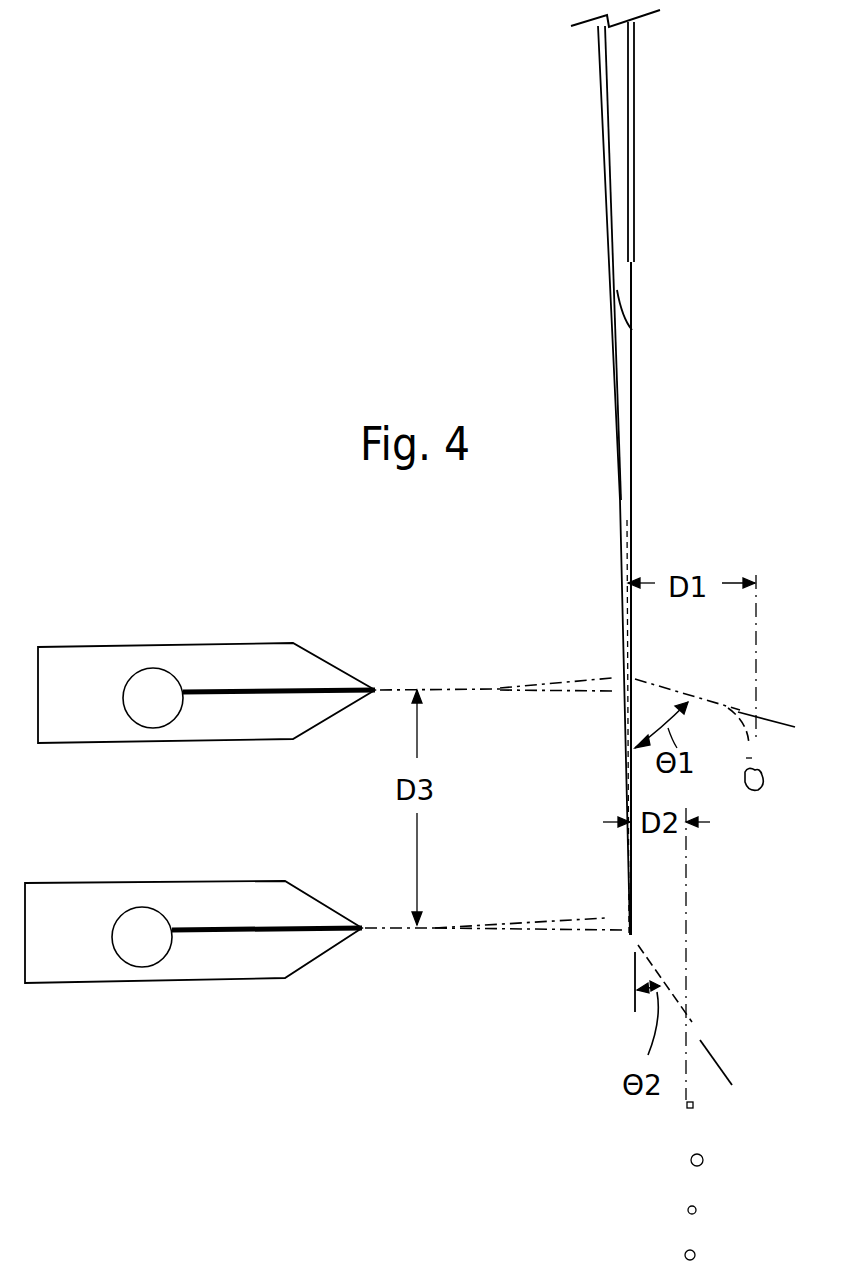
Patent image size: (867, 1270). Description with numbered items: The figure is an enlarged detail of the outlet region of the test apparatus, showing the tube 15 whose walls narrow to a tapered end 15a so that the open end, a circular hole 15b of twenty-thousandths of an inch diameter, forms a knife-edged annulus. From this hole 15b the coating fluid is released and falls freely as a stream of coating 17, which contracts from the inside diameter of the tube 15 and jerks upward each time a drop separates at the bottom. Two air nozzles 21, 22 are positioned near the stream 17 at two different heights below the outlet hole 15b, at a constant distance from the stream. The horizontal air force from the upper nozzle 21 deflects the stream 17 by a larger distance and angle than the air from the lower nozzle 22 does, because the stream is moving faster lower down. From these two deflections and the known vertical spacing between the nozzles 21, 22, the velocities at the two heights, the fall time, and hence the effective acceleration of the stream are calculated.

The tube 15 is at (600, 154).
The tapered end 15a is at (636, 262).
The hole 15b is at (632, 330).
The stream of coating 17 is at (625, 505).
The upper air nozzle 21 is at (190, 738).
The lower air nozzle 22 is at (245, 883).